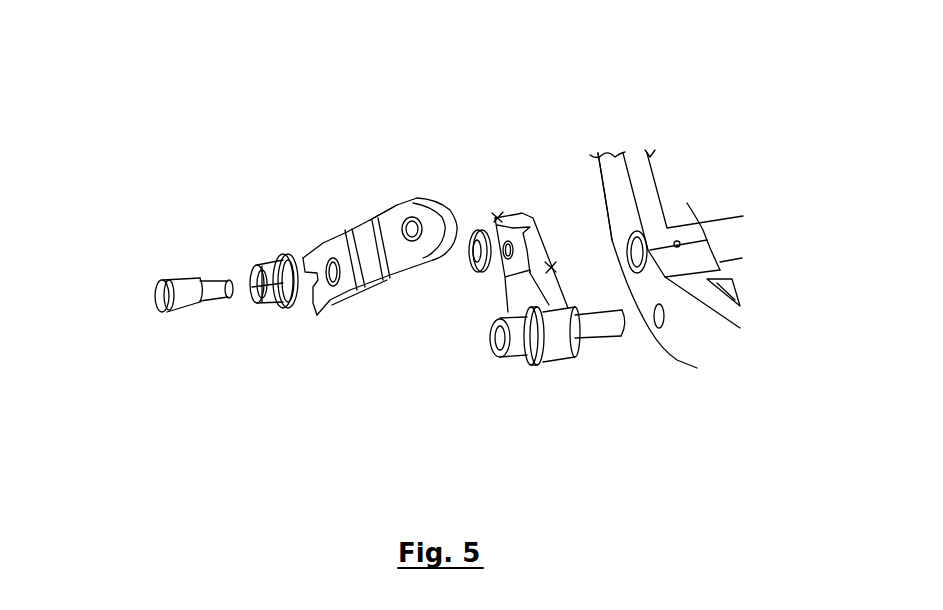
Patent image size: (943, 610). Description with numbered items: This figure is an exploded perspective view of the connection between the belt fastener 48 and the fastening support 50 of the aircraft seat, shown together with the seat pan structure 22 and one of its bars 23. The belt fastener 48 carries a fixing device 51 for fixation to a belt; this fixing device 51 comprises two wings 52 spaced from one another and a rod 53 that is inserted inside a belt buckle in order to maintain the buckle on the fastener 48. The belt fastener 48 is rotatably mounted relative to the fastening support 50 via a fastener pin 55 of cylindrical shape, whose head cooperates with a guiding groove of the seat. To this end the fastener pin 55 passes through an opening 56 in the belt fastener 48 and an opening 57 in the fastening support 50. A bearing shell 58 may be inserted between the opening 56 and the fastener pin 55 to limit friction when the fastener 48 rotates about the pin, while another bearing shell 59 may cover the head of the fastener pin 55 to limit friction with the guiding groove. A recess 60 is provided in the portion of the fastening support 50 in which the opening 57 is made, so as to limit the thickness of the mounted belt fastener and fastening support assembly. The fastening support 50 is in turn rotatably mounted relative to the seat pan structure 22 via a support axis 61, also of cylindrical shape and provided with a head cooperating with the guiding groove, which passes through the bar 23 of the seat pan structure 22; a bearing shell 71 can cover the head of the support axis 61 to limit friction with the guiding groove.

The seat pan structure 22 is at (670, 187).
The bar 23 is at (690, 347).
The belt fastener 48 is at (395, 232).
The fastening support 50 is at (545, 280).
The fixing device 51 is at (437, 185).
The wing 52 is at (417, 198).
The rod 53 is at (405, 217).
The fastener pin 55 is at (201, 278).
The opening 56 is at (330, 300).
The opening 57 is at (525, 213).
The bearing shell 58 is at (470, 272).
The bearing shell 59 is at (260, 262).
The recess 60 is at (497, 213).
The support axis 61 is at (539, 382).
The bearing shell 71 is at (517, 343).